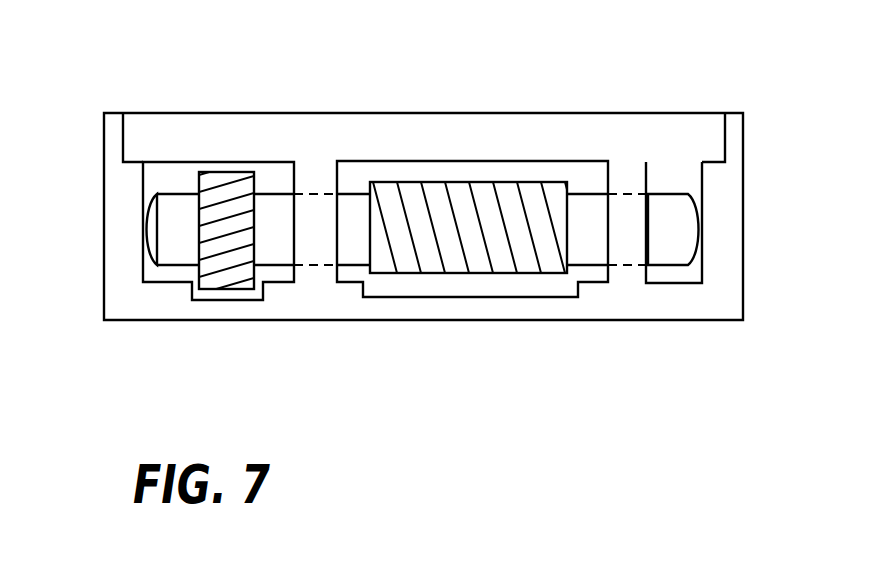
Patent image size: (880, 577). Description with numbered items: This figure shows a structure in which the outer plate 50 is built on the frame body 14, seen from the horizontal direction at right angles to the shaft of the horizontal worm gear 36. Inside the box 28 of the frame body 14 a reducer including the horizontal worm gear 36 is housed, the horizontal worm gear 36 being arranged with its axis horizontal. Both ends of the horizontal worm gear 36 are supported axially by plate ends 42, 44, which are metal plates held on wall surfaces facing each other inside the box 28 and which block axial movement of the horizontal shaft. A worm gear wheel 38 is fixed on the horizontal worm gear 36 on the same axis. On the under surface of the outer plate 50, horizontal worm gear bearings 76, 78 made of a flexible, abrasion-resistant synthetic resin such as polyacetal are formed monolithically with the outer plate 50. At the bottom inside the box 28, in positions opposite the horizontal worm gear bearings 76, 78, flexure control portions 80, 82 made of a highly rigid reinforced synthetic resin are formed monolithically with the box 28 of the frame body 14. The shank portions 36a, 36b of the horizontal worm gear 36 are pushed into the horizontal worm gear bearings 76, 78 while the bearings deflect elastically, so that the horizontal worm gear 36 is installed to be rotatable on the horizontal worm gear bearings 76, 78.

The frame body 14 is at (478, 307).
The box 28 is at (170, 177).
The horizontal worm gear 36 is at (432, 230).
The shank portion 36a is at (270, 240).
The shank portion 36b is at (668, 245).
The worm gear wheel 38 is at (225, 200).
The plate end 42 is at (147, 228).
The plate end 44 is at (697, 228).
The outer plate 50 is at (517, 133).
The horizontal worm gear bearing 76 is at (315, 178).
The horizontal worm gear bearing 78 is at (626, 177).
The flexure control portion 80 is at (315, 243).
The flexure control portion 82 is at (624, 245).